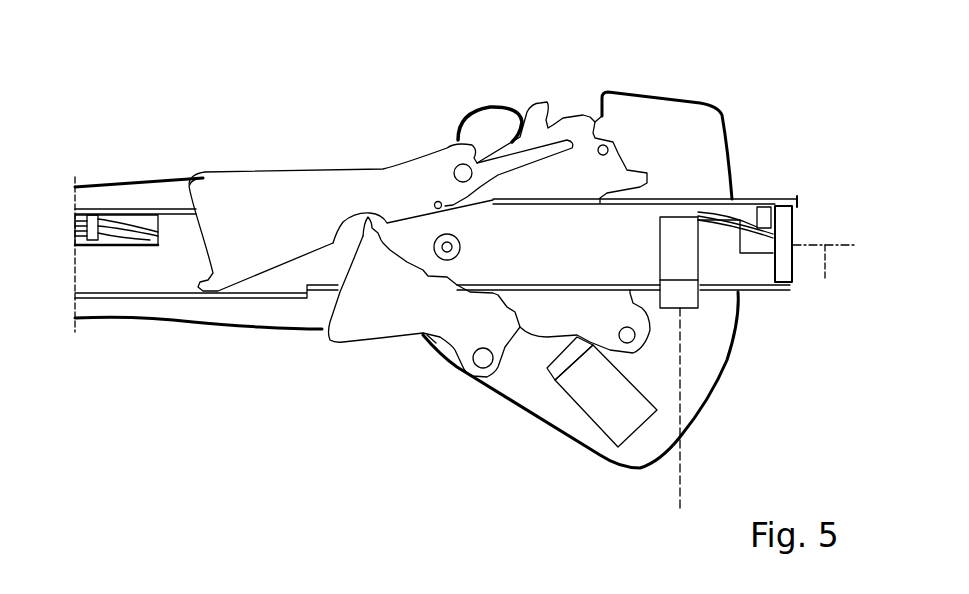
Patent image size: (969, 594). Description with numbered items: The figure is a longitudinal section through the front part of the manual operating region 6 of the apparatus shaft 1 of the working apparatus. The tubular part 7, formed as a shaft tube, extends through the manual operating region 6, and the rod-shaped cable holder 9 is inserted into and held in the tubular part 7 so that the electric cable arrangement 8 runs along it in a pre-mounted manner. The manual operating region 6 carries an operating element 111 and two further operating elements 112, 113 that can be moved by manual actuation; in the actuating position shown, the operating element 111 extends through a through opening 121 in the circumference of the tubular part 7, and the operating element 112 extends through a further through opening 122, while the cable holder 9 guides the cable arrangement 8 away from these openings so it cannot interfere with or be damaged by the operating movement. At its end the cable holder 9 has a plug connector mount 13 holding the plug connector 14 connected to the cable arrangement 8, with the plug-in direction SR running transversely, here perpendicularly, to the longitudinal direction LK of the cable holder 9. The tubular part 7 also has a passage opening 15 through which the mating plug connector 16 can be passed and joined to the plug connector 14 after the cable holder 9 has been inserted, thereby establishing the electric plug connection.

The apparatus shaft 1 is at (148, 181).
The manual operating region 6 is at (262, 331).
The tubular part 7 is at (190, 299).
The electric cable arrangement 8 is at (113, 216).
The cable holder 9 is at (178, 275).
The operating element 111 is at (382, 325).
The further operating element 112 is at (248, 187).
The further operating element 113 is at (537, 112).
The through opening 121 is at (325, 275).
The further through opening 122 is at (189, 182).
The plug connector mount 13 is at (697, 250).
The plug connector 14 is at (683, 243).
The passage opening 15 is at (700, 293).
The mating plug connector 16 is at (692, 309).
The longitudinal direction of the cable holder LK is at (825, 278).
The plug-in direction SR is at (683, 483).